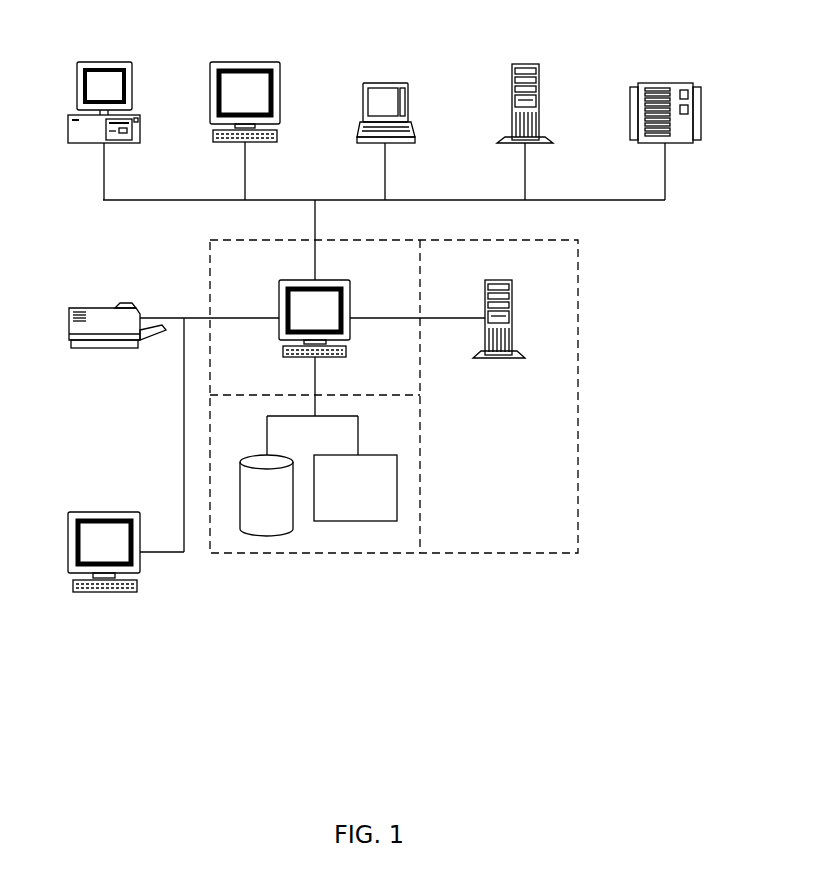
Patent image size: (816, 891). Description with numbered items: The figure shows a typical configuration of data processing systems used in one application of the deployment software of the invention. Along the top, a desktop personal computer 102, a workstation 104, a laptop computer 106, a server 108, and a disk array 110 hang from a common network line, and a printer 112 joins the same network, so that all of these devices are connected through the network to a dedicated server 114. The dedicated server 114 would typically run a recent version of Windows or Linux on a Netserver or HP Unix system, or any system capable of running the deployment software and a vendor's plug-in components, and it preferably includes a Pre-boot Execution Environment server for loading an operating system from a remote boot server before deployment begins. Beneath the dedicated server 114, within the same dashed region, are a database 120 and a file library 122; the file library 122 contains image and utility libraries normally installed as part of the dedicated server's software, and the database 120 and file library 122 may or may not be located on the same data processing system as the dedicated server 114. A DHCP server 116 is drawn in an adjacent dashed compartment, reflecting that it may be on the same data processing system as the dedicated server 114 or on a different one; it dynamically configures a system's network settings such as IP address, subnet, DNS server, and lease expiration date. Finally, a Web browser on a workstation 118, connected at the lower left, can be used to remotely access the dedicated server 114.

The desktop personal computer 102 is at (107, 107).
The workstation 104 is at (248, 106).
The laptop computer 106 is at (386, 116).
The server 108 is at (525, 106).
The disk array 110 is at (660, 116).
The printer 112 is at (117, 304).
The dedicated server 114 is at (322, 358).
The DHCP server 116 is at (503, 305).
The workstation 118 is at (114, 540).
The database 120 is at (266, 495).
The file library 122 is at (355, 488).